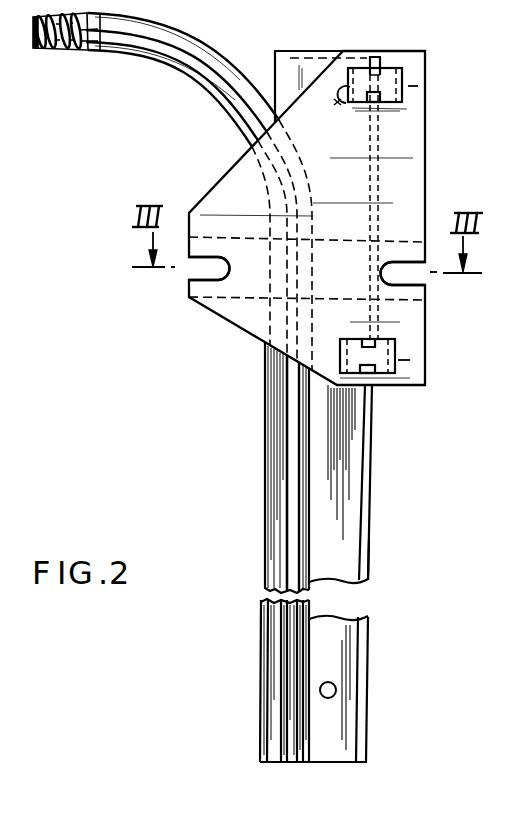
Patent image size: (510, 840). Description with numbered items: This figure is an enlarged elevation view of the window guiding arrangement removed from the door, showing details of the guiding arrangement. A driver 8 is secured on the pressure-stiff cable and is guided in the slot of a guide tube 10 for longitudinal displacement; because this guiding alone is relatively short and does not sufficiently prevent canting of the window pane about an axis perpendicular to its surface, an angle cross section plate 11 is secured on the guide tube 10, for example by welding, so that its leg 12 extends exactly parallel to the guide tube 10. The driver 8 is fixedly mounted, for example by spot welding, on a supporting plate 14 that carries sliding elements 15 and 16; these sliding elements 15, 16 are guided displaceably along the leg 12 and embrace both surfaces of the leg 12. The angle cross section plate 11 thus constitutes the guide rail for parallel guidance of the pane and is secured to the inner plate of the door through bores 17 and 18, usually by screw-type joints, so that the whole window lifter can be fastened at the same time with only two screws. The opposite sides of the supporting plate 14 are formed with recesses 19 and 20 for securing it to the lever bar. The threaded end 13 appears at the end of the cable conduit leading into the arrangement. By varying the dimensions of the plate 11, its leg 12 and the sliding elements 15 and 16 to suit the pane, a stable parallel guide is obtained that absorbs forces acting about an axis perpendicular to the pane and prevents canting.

The driver 8 is at (338, 257).
The guide tube 10 is at (277, 435).
The angle cross section plate 11 is at (345, 457).
The leg 12 is at (363, 562).
The threaded conduit end 13 is at (38, 49).
The supporting plate 14 is at (243, 318).
The sliding element 15 is at (390, 83).
The sliding element 16 is at (383, 353).
The bore 17 is at (337, 104).
The bore 18 is at (336, 689).
The recess 19 is at (200, 267).
The recess 20 is at (412, 279).